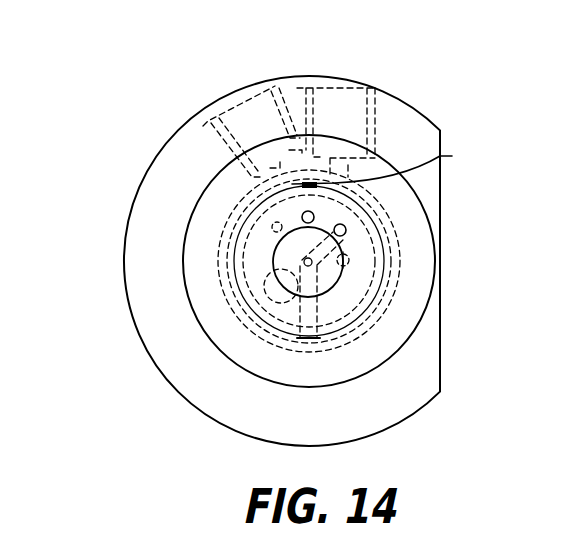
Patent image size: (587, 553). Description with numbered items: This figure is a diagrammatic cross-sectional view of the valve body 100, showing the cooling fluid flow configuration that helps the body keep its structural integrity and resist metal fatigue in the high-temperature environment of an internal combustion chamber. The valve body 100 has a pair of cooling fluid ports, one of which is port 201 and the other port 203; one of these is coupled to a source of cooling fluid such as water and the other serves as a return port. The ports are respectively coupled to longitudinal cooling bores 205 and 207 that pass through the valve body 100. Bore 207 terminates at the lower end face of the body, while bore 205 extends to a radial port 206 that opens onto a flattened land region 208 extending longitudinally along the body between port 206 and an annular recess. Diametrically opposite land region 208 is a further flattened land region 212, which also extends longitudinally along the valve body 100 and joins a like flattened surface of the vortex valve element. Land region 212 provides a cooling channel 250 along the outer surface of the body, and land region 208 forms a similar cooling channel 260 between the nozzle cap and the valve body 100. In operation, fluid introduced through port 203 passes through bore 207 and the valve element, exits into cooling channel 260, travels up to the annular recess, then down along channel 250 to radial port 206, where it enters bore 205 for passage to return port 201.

The valve body 100 is at (118, 284).
The cooling fluid port 201 is at (232, 104).
The cooling fluid port 203 is at (327, 88).
The longitudinal cooling bore 205 is at (302, 213).
The radial port 206 is at (253, 200).
The longitudinal cooling bore 207 is at (346, 230).
The flattened land region 208 is at (389, 164).
The flattened land region 212 is at (305, 340).
The cooling channel 250 is at (305, 340).
The cooling channel 260 is at (313, 185).